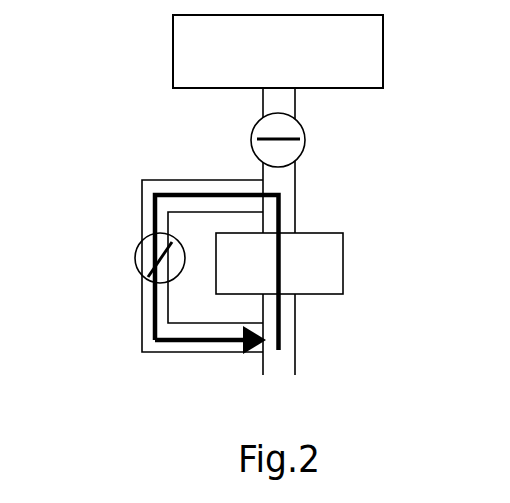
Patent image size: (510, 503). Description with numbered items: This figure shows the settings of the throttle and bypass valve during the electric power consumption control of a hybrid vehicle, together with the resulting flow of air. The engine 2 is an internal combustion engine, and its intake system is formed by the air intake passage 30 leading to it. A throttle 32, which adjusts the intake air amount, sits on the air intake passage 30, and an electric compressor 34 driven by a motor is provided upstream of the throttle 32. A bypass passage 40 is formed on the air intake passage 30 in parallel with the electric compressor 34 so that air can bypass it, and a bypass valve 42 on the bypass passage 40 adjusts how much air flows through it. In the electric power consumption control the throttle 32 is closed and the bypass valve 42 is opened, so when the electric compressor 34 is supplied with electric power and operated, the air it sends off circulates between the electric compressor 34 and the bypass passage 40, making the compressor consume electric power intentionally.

The engine 2 is at (173, 49).
The air intake passage 30 is at (297, 186).
The throttle 32 is at (253, 128).
The electric compressor 34 is at (344, 256).
The bypass passage 40 is at (142, 210).
The bypass valve 42 is at (136, 258).